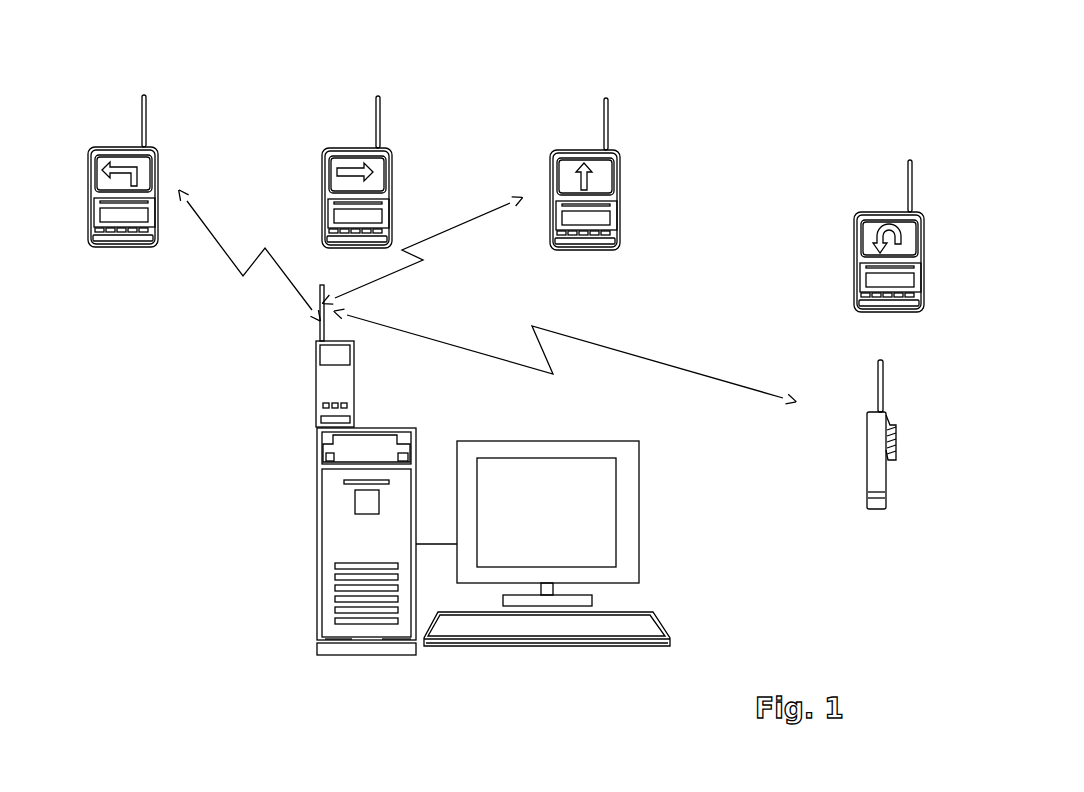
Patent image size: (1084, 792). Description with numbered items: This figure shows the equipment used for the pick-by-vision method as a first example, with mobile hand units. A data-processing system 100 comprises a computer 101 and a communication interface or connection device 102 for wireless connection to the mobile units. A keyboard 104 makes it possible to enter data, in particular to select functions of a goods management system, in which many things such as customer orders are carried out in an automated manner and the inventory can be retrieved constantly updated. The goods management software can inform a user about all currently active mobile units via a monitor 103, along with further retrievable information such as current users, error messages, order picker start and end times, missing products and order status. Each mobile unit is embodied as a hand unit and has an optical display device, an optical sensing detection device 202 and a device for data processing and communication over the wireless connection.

The data-processing system 100 is at (272, 605).
The computer 101 is at (338, 556).
The communication interface or connection device 102 is at (327, 382).
The monitor 103 is at (627, 525).
The keyboard 104 is at (483, 627).
The optical sensing detection device 202 is at (906, 442).